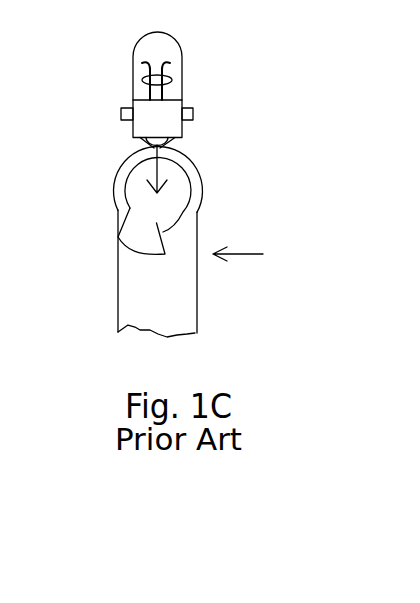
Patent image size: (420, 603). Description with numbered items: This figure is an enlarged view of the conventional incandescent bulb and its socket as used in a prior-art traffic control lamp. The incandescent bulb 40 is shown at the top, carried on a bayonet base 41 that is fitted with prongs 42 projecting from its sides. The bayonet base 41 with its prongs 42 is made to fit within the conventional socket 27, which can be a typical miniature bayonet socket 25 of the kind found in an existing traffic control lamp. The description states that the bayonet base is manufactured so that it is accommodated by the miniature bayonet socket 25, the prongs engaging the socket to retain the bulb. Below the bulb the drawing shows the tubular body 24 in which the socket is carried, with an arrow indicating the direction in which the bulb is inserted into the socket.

The incandescent bulb 40 is at (183, 87).
The bayonet base 41 is at (133, 135).
The prongs 42 is at (193, 120).
The tube 24 is at (120, 318).
The socket 27 is at (130, 257).
The miniature bayonet socket 25 is at (253, 256).